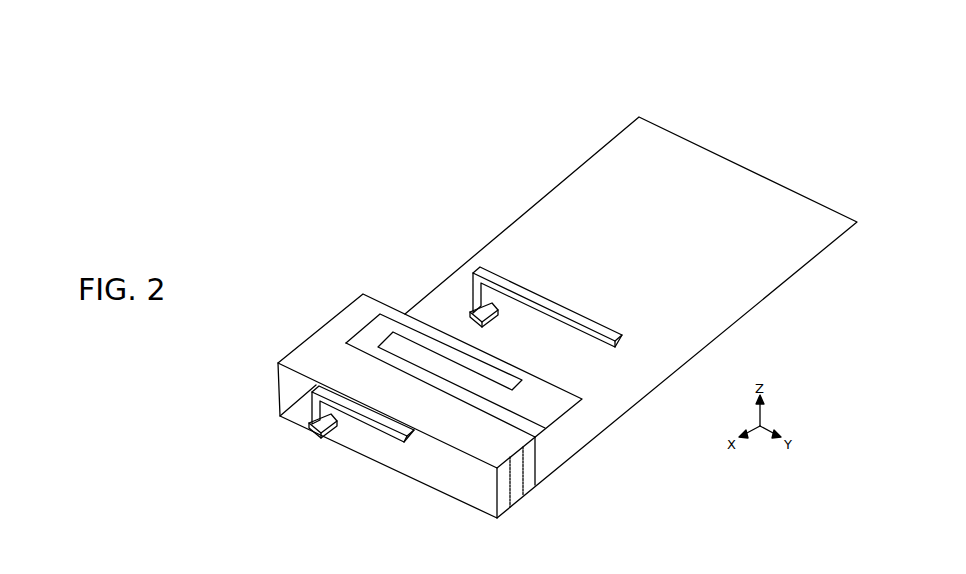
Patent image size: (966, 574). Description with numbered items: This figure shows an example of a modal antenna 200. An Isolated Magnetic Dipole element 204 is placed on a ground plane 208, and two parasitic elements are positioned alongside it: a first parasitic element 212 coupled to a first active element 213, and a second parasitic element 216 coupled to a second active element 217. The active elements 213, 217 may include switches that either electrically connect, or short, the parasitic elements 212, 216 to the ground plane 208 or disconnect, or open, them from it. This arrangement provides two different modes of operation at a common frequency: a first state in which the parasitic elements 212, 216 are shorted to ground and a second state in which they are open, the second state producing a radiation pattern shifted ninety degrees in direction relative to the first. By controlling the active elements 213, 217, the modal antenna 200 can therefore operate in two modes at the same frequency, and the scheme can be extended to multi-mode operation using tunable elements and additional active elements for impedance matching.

The modal antenna 200 is at (760, 165).
The Isolated Magnetic Dipole (IMD) element 204 is at (318, 363).
The ground plane 208 is at (727, 273).
The first parasitic element 212 is at (518, 277).
The first active element 213 is at (465, 302).
The second parasitic element 216 is at (372, 424).
The second active element 217 is at (310, 424).